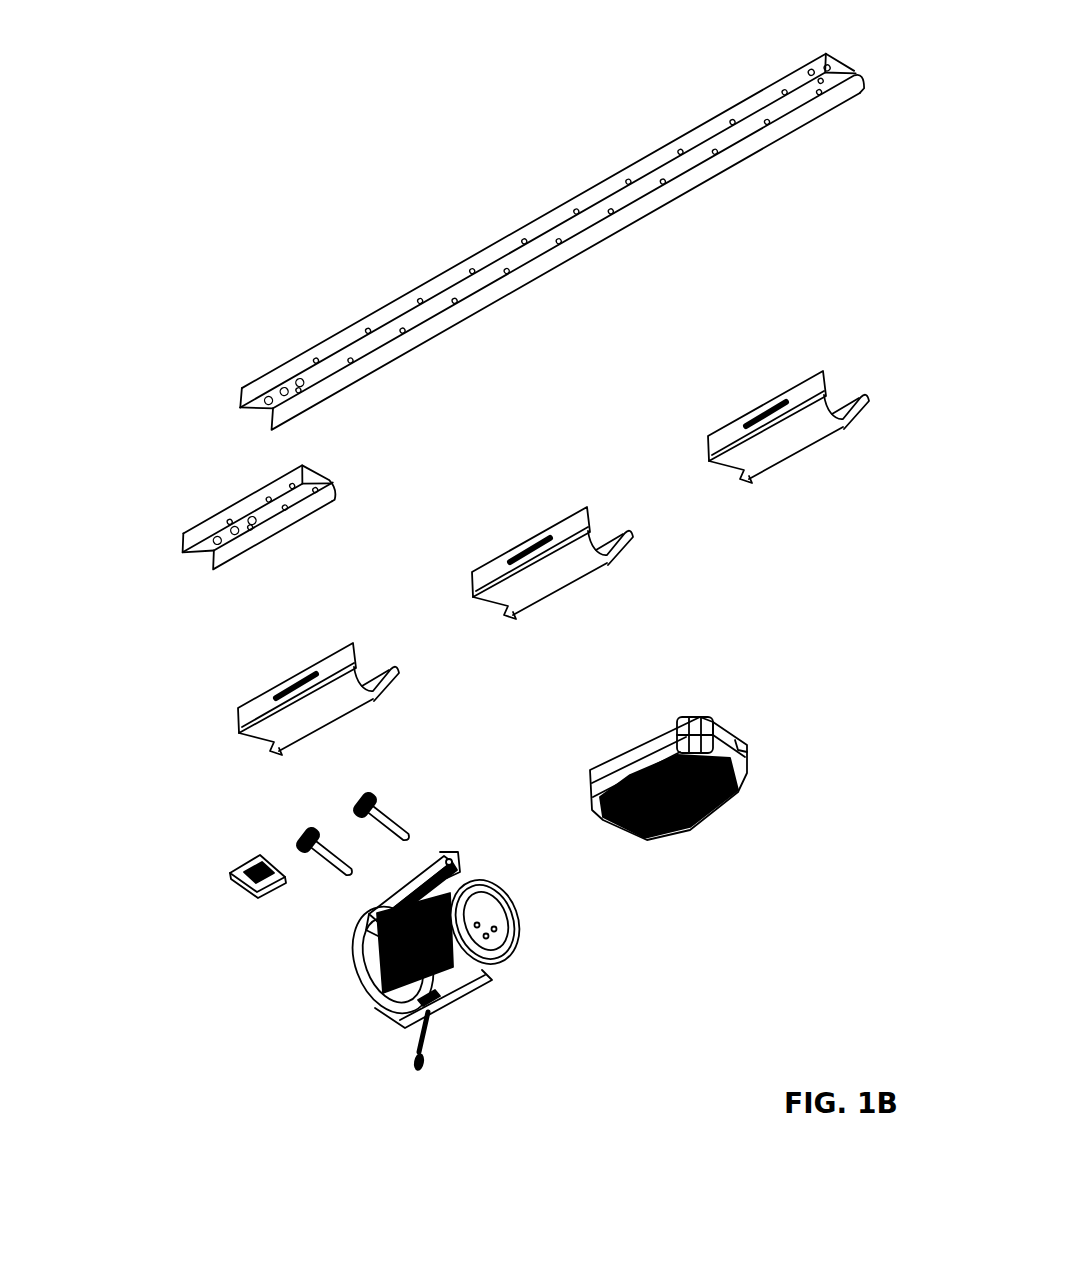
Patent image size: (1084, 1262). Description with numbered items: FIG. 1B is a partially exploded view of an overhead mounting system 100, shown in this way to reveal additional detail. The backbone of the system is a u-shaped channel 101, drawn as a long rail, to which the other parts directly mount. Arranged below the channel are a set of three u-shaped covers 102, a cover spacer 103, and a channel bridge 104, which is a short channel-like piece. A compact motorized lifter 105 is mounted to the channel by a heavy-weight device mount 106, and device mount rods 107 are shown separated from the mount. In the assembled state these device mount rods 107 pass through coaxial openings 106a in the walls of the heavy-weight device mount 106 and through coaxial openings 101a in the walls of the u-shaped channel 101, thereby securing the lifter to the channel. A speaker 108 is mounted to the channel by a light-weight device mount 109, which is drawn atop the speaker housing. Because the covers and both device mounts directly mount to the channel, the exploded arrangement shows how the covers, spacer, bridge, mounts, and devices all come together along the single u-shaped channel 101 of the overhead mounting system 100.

The overhead mounting system 100 is at (200, 72).
The u-shaped channel 101 is at (593, 186).
The coaxial openings in the channel walls 101a is at (392, 326).
The u-shaped cover 102 is at (762, 472).
The cover spacer 103 is at (245, 862).
The channel bridge 104 is at (226, 512).
The compact motorized lifter 105 is at (482, 982).
The heavy-weight device mount 106 is at (458, 858).
The coaxial openings in the heavy-weight device mount walls 106a is at (390, 893).
The device mount rods 107 is at (383, 823).
The speaker 108 is at (652, 840).
The light-weight device mount 109 is at (683, 717).